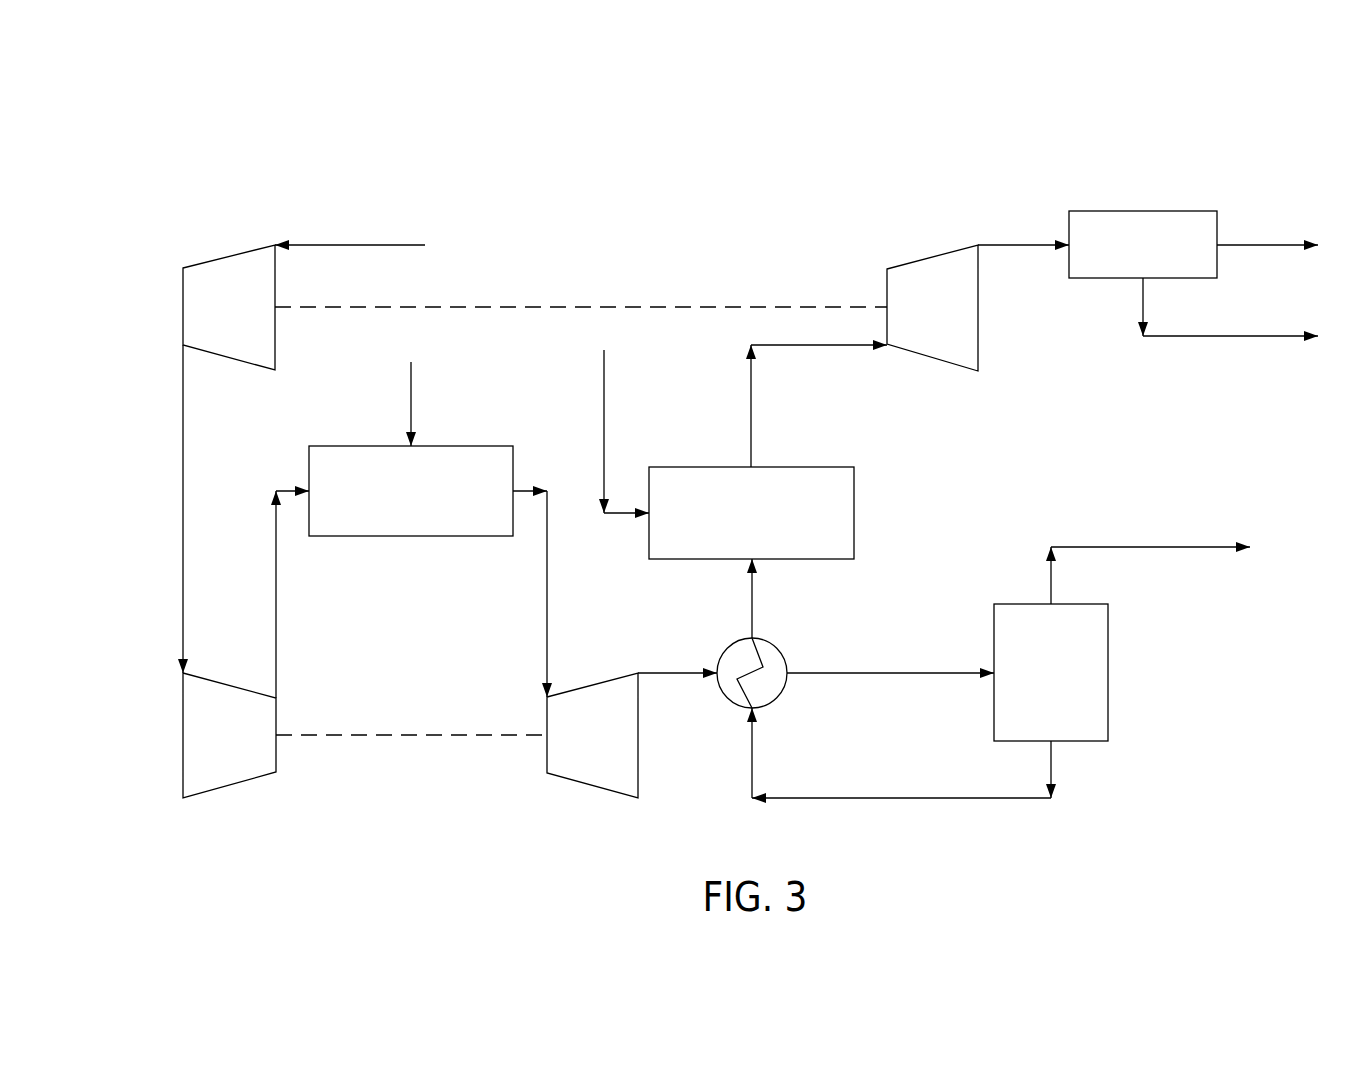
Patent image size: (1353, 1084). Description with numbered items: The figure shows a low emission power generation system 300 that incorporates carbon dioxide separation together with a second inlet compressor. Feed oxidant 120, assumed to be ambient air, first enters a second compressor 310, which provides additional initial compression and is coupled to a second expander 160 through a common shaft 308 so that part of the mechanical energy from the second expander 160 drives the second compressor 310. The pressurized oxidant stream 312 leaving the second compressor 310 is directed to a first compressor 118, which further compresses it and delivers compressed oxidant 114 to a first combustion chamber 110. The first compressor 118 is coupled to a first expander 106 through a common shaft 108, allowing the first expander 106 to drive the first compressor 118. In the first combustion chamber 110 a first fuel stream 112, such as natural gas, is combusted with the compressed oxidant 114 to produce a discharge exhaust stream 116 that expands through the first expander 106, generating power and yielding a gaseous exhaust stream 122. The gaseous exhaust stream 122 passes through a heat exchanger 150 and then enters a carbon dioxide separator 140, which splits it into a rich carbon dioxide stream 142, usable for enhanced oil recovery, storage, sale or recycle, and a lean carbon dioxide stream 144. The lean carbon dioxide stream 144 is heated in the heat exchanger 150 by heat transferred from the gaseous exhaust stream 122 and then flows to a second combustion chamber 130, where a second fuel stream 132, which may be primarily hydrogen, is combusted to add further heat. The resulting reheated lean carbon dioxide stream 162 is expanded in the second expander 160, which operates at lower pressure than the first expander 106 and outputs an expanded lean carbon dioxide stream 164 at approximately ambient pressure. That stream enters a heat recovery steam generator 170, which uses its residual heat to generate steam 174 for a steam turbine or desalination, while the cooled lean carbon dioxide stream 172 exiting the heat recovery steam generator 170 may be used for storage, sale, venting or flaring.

The power generation system 300 is at (798, 115).
The second compressor 310 is at (209, 318).
The common shaft 308 is at (604, 307).
The feed oxidant 120 is at (348, 243).
The pressurized oxidant stream 312 is at (183, 432).
The first compressor 118 is at (200, 748).
The common shaft 108 is at (401, 735).
The compressed oxidant 114 is at (276, 591).
The first combustion chamber 110 is at (391, 507).
The first fuel stream 112 is at (411, 378).
The discharge exhaust stream 116 is at (547, 605).
The first expander 106 is at (573, 748).
The second fuel stream 132 is at (604, 376).
The second combustion chamber 130 is at (732, 523).
The reheated lean CO2 stream 162 is at (751, 412).
The second expander 160 is at (913, 318).
The expanded lean CO2 stream 164 is at (1006, 243).
The heat recovery steam generator 170 is at (1123, 258).
The cooled lean CO2 stream 172 is at (1270, 243).
The steam 174 is at (1230, 336).
The heat exchanger 150 is at (723, 695).
The gaseous exhaust stream 122 is at (660, 670).
The lean CO2 stream 144 is at (752, 597).
The CO2 separator 140 is at (1031, 686).
The rich CO2 stream 142 is at (1150, 547).